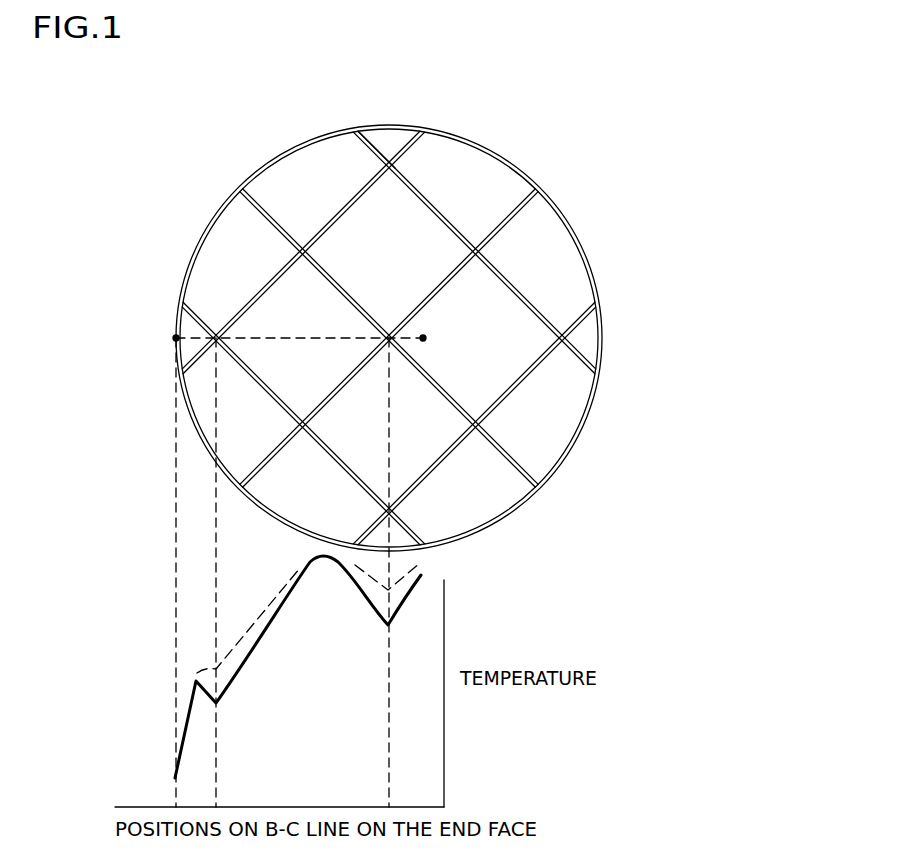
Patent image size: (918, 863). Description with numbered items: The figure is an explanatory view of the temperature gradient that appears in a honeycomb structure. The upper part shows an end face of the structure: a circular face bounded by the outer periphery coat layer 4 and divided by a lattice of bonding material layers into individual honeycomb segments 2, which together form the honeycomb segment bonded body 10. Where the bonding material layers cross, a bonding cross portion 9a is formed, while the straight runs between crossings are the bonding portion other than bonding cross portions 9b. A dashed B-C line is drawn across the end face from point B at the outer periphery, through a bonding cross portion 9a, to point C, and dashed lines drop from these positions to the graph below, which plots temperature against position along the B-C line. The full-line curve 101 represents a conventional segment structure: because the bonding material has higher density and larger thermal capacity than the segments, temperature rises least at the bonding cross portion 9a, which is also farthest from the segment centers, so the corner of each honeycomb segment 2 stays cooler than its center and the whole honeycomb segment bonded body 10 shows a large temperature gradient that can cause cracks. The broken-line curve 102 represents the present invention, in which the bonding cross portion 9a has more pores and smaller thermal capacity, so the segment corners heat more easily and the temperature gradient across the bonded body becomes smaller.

The honeycomb segment 2 is at (383, 314).
The outer periphery coat layer 4 is at (454, 134).
The bonding cross portion 9a is at (215, 334).
The bonding portion other than bonding cross portions 9b is at (265, 287).
The honeycomb segment bonded body 10 is at (350, 152).
The point B on end face B is at (175, 338).
The point C on end face C is at (424, 337).
The curve showing conventional temperature gradient 101 is at (253, 643).
The curve showing temperature gradient of the invention 102 is at (244, 620).